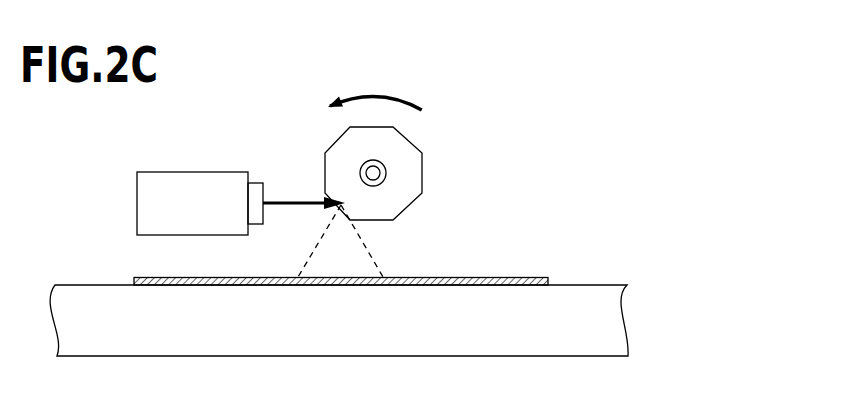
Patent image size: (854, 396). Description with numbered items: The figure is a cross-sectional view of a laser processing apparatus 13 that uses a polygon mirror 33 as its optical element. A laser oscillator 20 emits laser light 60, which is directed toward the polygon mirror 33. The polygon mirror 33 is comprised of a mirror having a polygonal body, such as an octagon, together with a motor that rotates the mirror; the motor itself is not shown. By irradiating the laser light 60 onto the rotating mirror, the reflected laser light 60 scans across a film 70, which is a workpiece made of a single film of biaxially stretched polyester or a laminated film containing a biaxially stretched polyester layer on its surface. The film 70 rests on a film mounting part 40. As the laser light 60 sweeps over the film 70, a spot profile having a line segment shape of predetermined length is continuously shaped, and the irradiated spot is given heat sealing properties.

The laser processing apparatus 13 is at (92, 120).
The laser oscillator 20 is at (148, 193).
The polygon mirror 33 is at (390, 138).
The film mounting part 40 is at (607, 334).
The laser light 60 is at (332, 258).
The film 70 is at (472, 277).